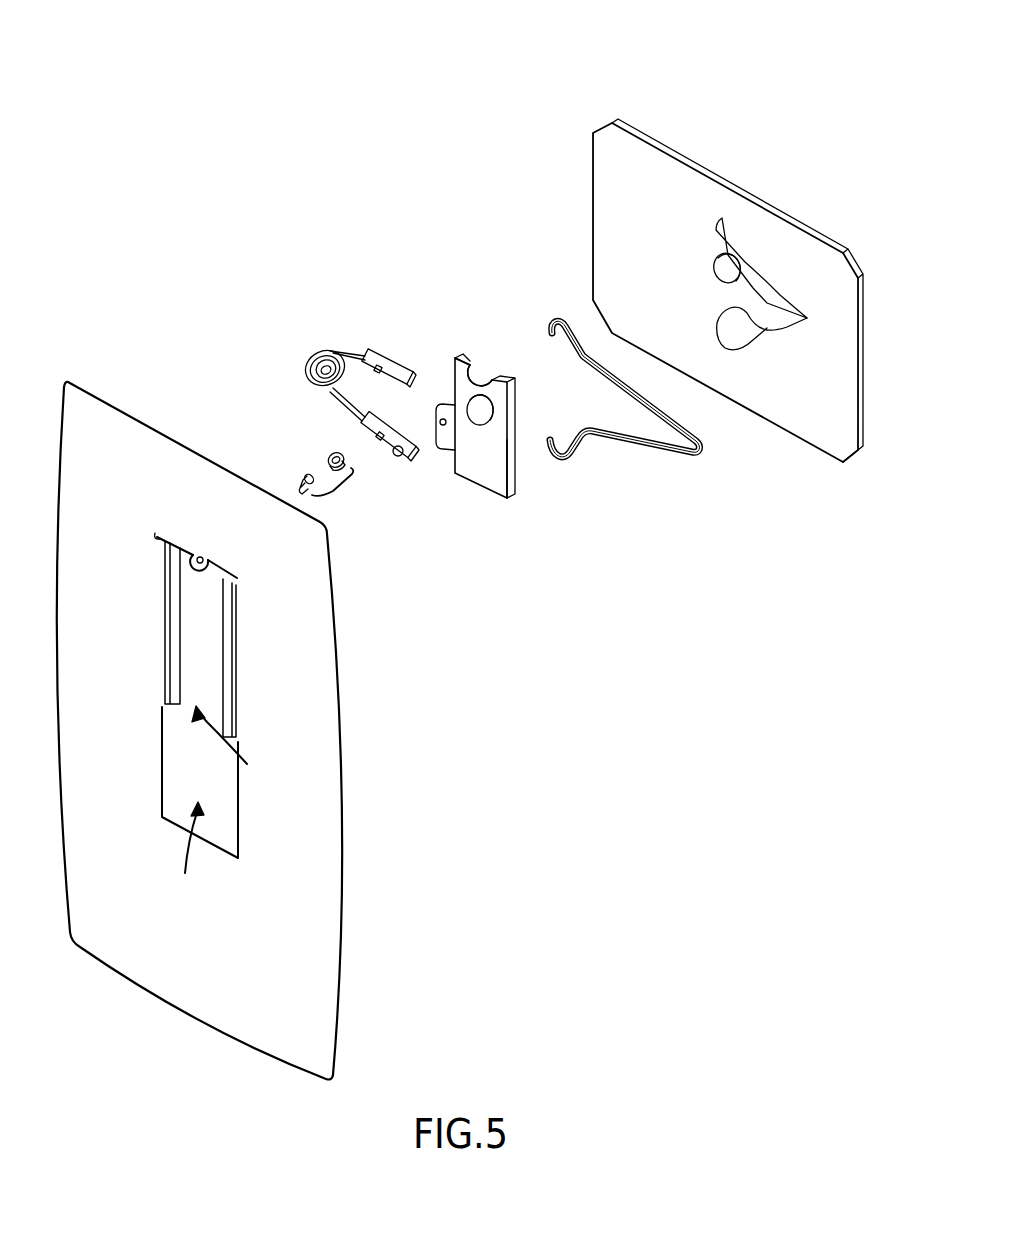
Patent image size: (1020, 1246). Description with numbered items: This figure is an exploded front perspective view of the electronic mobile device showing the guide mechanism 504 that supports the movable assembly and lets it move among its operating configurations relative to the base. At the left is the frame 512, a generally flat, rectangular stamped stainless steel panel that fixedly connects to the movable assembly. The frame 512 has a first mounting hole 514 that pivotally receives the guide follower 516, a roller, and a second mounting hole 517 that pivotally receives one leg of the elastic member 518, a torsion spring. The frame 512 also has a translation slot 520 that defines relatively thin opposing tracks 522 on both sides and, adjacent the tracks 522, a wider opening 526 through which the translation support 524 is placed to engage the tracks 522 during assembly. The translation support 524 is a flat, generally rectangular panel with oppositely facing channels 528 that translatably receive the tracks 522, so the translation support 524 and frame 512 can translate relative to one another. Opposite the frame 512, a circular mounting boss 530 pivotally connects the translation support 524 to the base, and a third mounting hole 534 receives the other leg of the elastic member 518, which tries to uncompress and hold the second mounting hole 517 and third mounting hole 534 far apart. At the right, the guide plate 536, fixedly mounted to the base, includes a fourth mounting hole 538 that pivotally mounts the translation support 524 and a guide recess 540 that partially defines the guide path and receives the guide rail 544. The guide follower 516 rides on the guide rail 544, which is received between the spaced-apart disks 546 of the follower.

The guide mechanism 504 is at (563, 96).
The frame 512 is at (342, 925).
The first mounting hole 514 is at (200, 558).
The guide follower 516 is at (337, 497).
The second mounting hole 517 is at (156, 535).
The elastic member 518 is at (345, 357).
The translation slot 520 is at (230, 782).
The tracks 522 is at (183, 640).
The translation support 524 is at (477, 484).
The opening 526 is at (186, 853).
The channels 528 is at (458, 358).
The circular mounting boss 530 is at (486, 379).
The third mounting hole 534 is at (443, 427).
The guide plate 536 is at (662, 150).
The fourth mounting hole 538 is at (717, 267).
The guide recess 540 is at (786, 328).
The guide rail 544 is at (618, 444).
The spaced-apart disks 546 is at (332, 452).